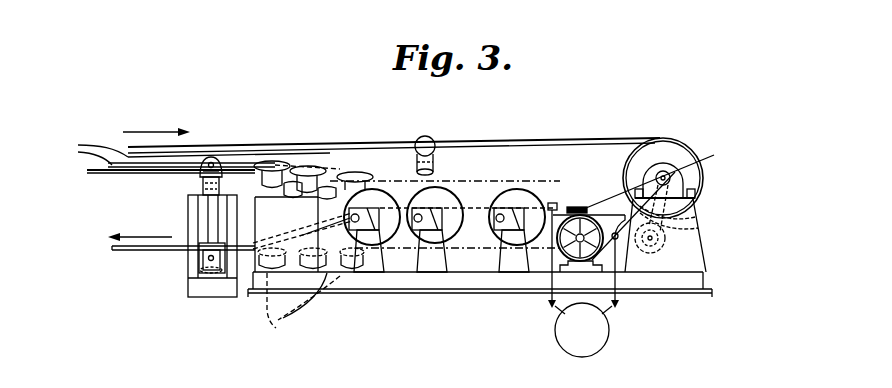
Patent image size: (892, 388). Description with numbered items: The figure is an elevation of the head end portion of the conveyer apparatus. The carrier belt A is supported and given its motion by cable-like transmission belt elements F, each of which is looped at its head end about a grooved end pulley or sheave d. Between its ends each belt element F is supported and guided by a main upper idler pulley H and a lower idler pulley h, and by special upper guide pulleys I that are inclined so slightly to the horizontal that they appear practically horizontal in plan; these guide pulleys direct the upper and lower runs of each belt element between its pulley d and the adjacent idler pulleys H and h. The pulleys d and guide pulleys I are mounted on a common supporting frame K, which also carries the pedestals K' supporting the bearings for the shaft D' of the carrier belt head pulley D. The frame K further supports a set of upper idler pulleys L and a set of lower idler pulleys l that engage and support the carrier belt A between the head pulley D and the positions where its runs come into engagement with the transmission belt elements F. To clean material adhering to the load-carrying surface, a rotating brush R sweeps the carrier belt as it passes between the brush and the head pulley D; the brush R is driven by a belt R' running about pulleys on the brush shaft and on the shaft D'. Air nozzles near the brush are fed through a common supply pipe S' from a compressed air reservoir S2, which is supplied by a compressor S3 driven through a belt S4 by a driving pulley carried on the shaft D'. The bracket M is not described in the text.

The transmission belt element F is at (115, 266).
The carrier belt A is at (381, 143).
The main upper idler pulley H is at (214, 157).
The lower idler pulley h is at (207, 250).
The bracket M is at (188, 206).
The upper guide pulley I is at (350, 172).
The upper idler pulley L is at (437, 158).
The grooved end pulley d is at (380, 192).
The lower idler pulley l is at (425, 236).
The supporting frame K is at (480, 296).
The compressor S3 is at (578, 206).
The belt S4 is at (605, 200).
The common supply pipe S' is at (611, 237).
The compressed air reservoir S2 is at (583, 328).
The head pulley D is at (667, 172).
The shaft of head pulley D' is at (684, 191).
The pedestal K' is at (665, 235).
The rotating brush R is at (680, 232).
The belt R' is at (688, 204).